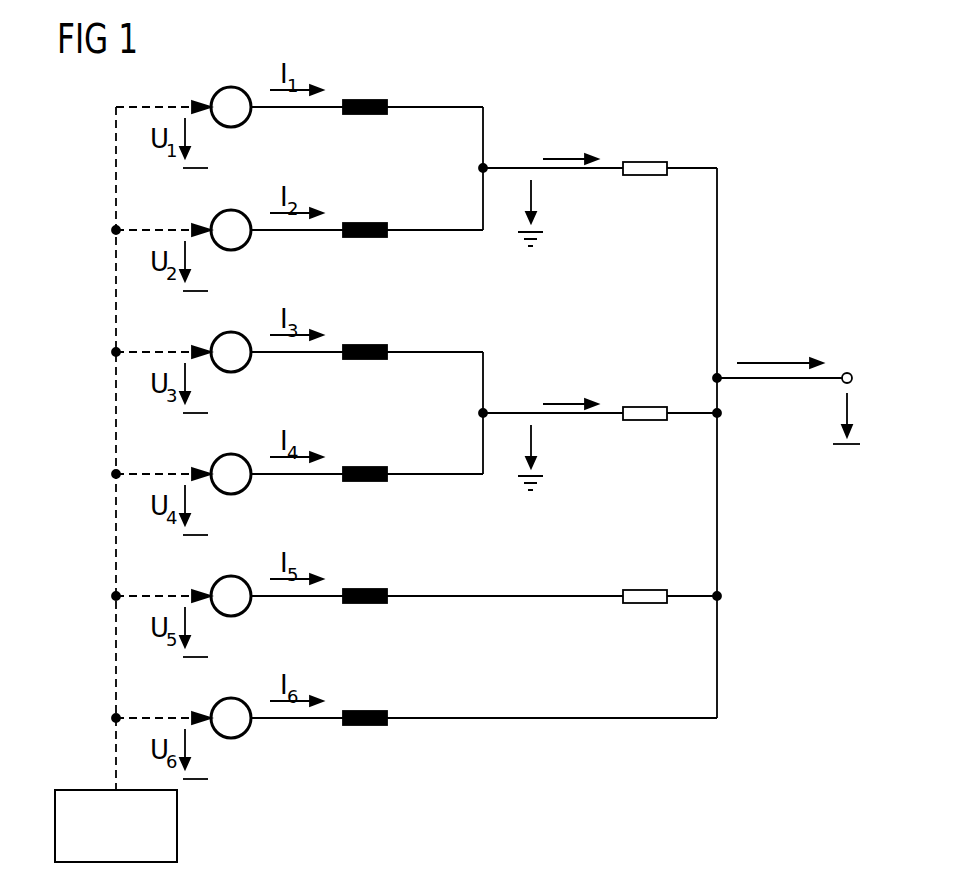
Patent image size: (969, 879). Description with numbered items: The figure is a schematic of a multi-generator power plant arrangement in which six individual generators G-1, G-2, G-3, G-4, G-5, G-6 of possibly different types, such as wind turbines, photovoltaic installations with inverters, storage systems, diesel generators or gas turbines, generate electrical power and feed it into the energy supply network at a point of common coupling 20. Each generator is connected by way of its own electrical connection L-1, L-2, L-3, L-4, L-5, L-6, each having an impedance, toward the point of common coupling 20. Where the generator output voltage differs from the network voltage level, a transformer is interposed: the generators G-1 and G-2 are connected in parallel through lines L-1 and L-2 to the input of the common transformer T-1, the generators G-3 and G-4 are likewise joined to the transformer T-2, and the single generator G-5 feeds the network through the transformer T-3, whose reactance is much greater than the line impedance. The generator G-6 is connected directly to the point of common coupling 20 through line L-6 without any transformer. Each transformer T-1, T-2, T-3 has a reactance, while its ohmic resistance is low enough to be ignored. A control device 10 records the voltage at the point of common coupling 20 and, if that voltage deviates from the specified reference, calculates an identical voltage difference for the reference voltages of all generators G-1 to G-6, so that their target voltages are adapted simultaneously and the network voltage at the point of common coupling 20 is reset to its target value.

The control device 10 is at (177, 826).
The point of common coupling 20 is at (848, 372).
The generator G-1 is at (248, 120).
The generator G-2 is at (233, 209).
The generator G-3 is at (233, 331).
The generator G-4 is at (233, 453).
The generator G-5 is at (233, 575).
The generator G-6 is at (233, 697).
The electrical connection L-1 is at (366, 99).
The electrical connection L-2 is at (366, 222).
The electrical connection L-3 is at (366, 344).
The electrical connection L-4 is at (366, 466).
The electrical connection L-5 is at (366, 588).
The electrical connection L-6 is at (366, 710).
The transformer T-1 is at (645, 176).
The transformer T-2 is at (645, 421).
The transformer T-3 is at (645, 604).